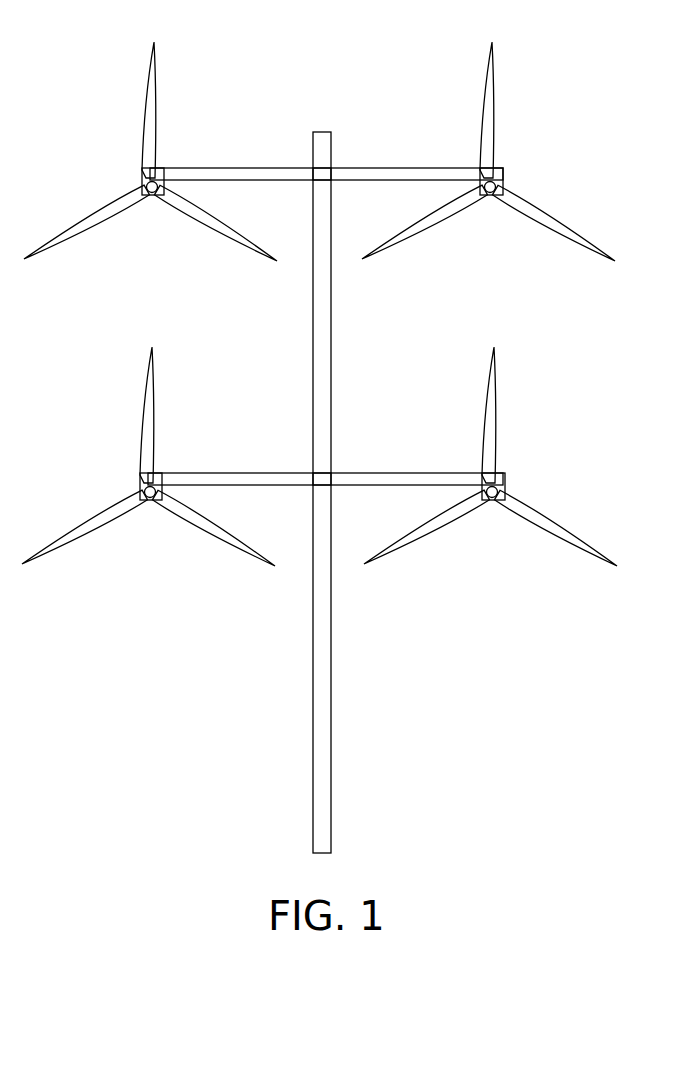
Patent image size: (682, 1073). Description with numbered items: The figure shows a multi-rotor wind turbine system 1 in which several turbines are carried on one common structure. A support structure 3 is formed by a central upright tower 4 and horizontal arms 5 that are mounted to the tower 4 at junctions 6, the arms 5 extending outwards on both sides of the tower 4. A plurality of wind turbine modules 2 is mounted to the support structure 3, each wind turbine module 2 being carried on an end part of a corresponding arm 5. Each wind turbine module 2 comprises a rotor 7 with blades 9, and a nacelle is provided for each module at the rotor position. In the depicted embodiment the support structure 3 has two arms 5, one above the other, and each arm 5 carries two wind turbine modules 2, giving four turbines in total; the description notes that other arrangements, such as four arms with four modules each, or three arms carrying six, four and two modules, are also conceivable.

The wind turbine system 1 is at (87, 108).
The wind turbine module 2 is at (155, 215).
The support structure 3 is at (363, 410).
The tower 4 is at (313, 688).
The arm 5 is at (396, 168).
The junction 6 is at (313, 167).
The rotor 7 is at (541, 179).
The blade 9 is at (493, 118).